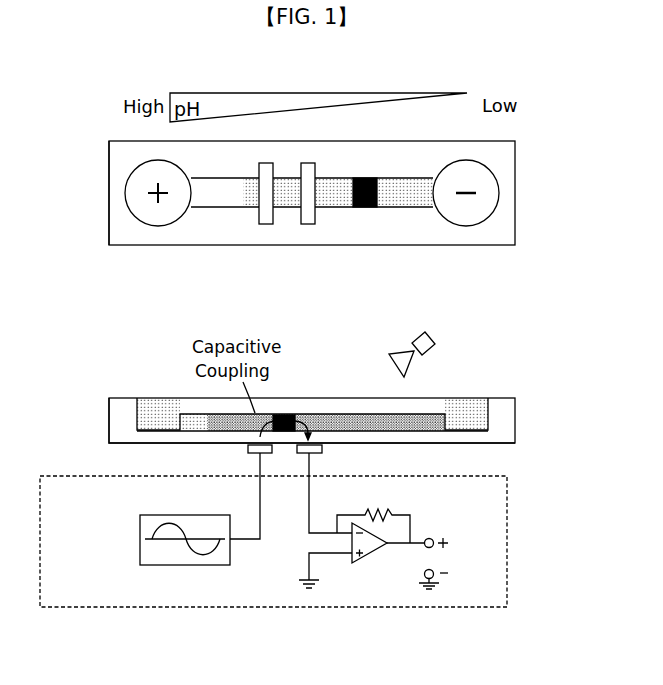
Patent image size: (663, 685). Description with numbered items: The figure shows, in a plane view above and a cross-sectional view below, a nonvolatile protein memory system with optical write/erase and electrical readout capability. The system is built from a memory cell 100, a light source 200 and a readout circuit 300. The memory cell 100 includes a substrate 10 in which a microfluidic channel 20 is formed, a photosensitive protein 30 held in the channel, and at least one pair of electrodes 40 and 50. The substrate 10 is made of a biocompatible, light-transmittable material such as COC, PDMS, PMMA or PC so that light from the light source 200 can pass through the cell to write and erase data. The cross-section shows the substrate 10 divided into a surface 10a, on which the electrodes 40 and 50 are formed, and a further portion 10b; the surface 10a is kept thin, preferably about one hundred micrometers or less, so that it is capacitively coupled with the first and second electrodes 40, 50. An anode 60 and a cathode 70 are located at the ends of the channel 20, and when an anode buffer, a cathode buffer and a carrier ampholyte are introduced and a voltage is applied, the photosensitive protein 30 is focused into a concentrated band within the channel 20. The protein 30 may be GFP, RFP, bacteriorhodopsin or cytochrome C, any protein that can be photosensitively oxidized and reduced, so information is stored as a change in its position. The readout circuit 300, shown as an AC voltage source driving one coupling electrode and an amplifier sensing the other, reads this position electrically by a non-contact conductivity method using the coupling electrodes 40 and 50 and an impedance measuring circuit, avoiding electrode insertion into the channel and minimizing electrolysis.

The substrate 10 is at (109, 186).
The surface 10a is at (150, 438).
The upper substrate (cover) 10b is at (180, 408).
The microfluidic channel 20 is at (337, 207).
The photosensitive protein 30 is at (365, 178).
The second electrode 40 is at (308, 224).
The first electrode 50 is at (266, 224).
The anode 60 is at (467, 226).
The cathode 70 is at (160, 226).
The memory cell 100 is at (515, 192).
The light source 200 is at (437, 340).
The readout circuit 300 is at (507, 522).